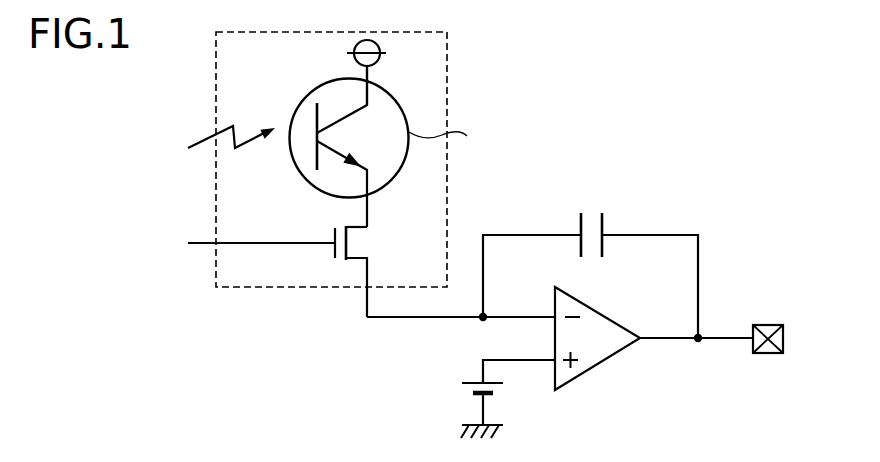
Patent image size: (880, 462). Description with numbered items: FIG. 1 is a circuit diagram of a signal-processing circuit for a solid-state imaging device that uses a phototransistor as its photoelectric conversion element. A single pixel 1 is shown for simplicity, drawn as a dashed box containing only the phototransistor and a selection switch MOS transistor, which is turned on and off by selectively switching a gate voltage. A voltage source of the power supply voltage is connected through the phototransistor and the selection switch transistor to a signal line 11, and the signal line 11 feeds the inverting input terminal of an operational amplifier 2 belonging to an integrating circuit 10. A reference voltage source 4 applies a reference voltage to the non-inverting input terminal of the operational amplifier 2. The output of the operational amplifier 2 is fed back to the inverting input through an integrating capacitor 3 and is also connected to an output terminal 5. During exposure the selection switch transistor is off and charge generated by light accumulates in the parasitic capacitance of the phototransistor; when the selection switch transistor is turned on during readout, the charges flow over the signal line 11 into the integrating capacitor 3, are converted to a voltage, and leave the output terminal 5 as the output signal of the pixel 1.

The pixel 1 is at (447, 84).
The operational amplifier 2 is at (603, 308).
The integrating capacitor 3 is at (603, 219).
The reference voltage source 4 is at (465, 382).
The output terminal 5 is at (770, 325).
The integrating circuit 10 is at (534, 281).
The signal line 11 is at (397, 318).